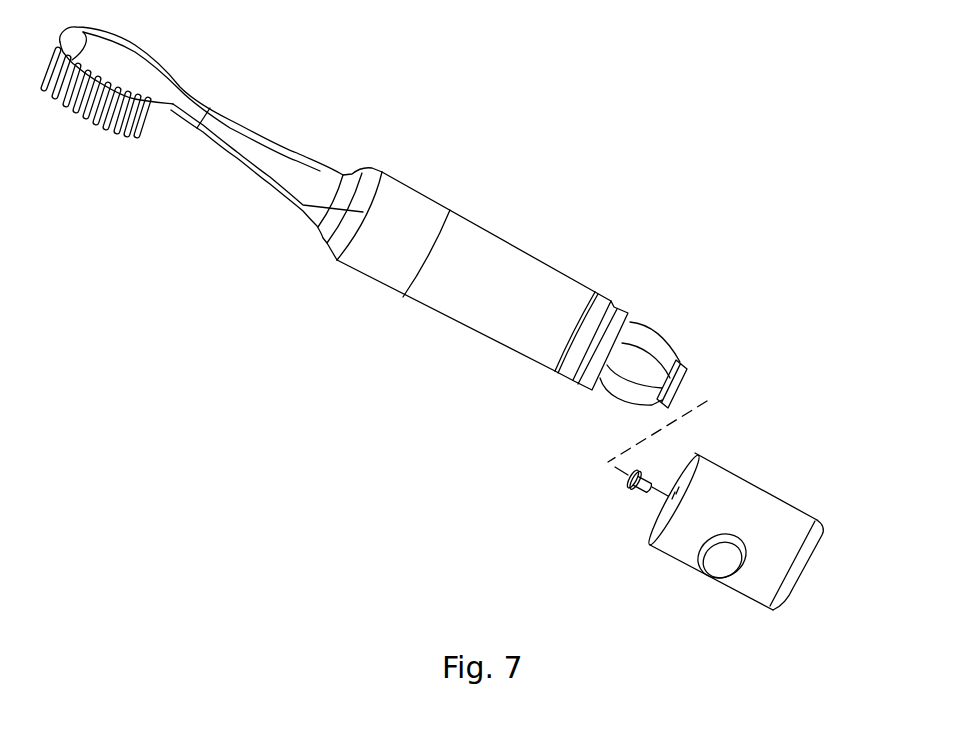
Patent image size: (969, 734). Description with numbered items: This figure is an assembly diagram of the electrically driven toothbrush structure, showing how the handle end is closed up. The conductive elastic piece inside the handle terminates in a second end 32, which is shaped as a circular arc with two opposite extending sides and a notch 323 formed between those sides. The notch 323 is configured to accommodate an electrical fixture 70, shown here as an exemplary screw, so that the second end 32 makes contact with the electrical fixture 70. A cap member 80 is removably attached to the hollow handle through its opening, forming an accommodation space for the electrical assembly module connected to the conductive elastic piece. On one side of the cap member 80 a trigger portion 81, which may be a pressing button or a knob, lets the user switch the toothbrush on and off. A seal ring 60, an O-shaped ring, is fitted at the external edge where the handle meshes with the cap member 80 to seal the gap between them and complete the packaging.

The second end 32 is at (618, 392).
The notch 323 is at (681, 388).
The seal ring 60 is at (595, 294).
The electrical fixture 70 is at (633, 493).
The cap member 80 is at (750, 498).
The trigger portion 81 is at (718, 565).